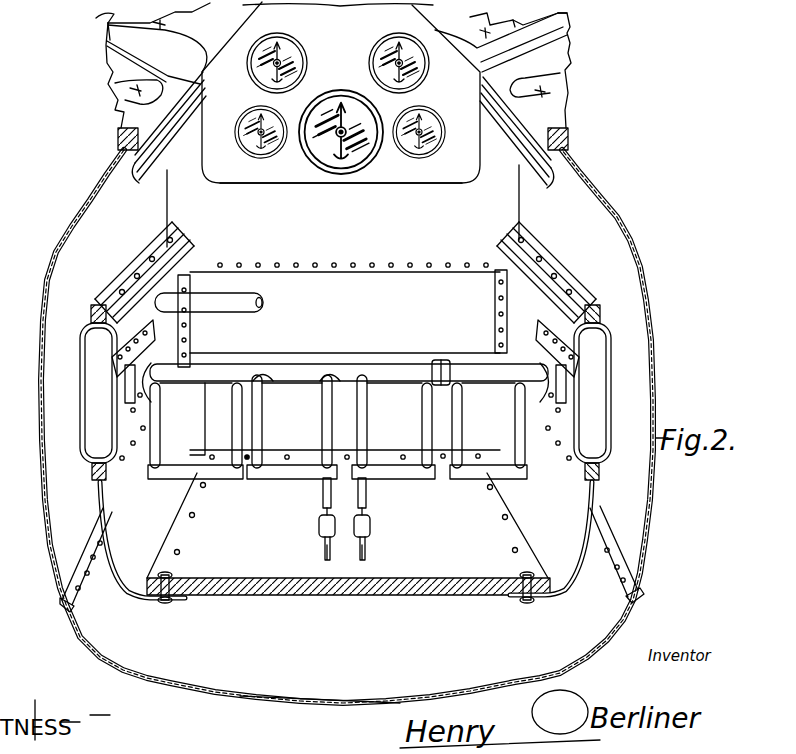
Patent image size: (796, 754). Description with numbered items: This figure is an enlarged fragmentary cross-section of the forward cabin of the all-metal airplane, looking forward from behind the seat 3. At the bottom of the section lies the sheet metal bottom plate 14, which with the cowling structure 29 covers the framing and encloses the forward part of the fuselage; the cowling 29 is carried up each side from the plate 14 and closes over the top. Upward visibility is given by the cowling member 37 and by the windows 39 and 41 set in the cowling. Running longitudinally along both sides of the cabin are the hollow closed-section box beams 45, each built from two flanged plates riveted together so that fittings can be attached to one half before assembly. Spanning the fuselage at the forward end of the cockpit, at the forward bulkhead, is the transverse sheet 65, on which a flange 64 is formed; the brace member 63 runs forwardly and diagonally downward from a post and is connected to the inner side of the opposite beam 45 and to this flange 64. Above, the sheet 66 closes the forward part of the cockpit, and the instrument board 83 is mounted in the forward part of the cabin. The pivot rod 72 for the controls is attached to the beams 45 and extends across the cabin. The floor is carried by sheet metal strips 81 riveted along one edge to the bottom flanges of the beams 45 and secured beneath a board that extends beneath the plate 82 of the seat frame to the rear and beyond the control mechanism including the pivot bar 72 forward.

The seat 3 is at (108, 24).
The cowling member 37 is at (103, 39).
The window 39 is at (113, 97).
The window 41 is at (572, 10).
The cowling structure 29 is at (52, 250).
The box beam 45 is at (120, 263).
The flange 64 is at (188, 270).
The instrument board 83 is at (298, 188).
The sheet 66 is at (341, 113).
The brace member 63 is at (200, 317).
The transverse sheet 65 is at (345, 308).
The pivot rod 72 is at (458, 368).
The sheet metal strip 81 is at (120, 573).
The plate of the seat frame 82 is at (270, 570).
The bottom plate 14 is at (278, 703).